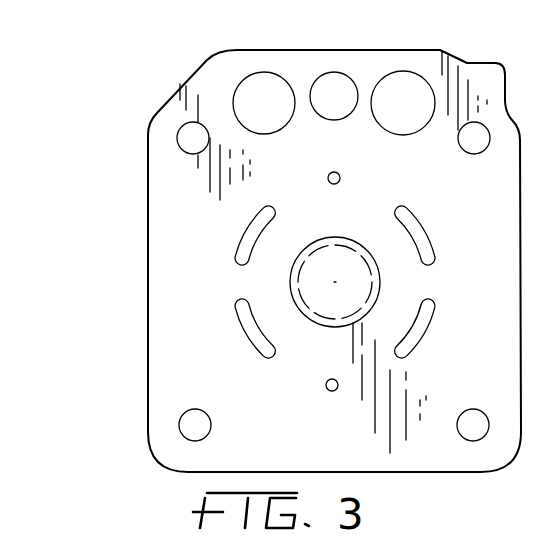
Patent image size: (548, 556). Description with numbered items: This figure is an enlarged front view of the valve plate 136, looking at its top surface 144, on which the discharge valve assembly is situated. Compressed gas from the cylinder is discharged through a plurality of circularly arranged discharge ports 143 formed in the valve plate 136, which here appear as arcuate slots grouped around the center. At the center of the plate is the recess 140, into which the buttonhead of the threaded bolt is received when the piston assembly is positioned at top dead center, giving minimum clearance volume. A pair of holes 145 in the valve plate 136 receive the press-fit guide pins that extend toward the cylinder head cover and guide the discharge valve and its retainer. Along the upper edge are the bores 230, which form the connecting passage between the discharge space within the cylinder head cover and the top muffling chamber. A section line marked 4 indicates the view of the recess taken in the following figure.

The valve plate 136 is at (175, 73).
The bores 230 is at (393, 72).
The top surface 144 is at (183, 198).
The recess 140 is at (312, 285).
The discharge ports 143 is at (238, 230).
The holes 145 is at (332, 172).
The section line 4- 4 is at (437, 223).